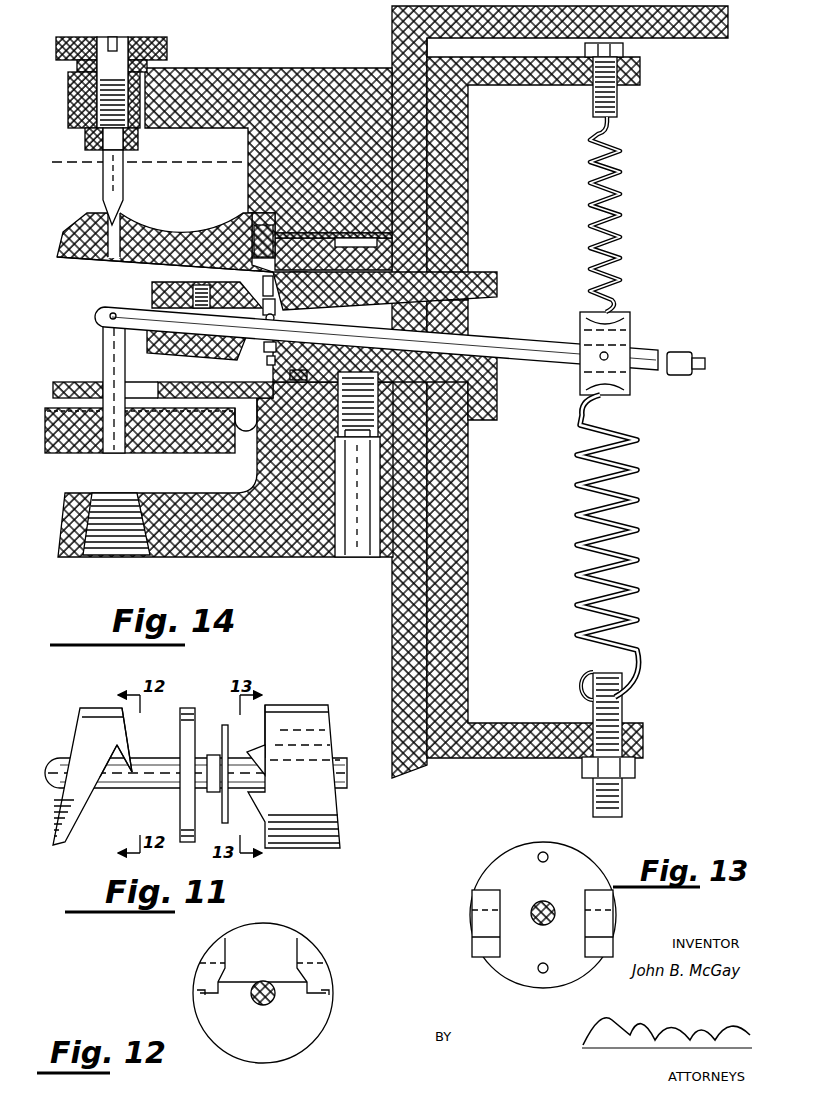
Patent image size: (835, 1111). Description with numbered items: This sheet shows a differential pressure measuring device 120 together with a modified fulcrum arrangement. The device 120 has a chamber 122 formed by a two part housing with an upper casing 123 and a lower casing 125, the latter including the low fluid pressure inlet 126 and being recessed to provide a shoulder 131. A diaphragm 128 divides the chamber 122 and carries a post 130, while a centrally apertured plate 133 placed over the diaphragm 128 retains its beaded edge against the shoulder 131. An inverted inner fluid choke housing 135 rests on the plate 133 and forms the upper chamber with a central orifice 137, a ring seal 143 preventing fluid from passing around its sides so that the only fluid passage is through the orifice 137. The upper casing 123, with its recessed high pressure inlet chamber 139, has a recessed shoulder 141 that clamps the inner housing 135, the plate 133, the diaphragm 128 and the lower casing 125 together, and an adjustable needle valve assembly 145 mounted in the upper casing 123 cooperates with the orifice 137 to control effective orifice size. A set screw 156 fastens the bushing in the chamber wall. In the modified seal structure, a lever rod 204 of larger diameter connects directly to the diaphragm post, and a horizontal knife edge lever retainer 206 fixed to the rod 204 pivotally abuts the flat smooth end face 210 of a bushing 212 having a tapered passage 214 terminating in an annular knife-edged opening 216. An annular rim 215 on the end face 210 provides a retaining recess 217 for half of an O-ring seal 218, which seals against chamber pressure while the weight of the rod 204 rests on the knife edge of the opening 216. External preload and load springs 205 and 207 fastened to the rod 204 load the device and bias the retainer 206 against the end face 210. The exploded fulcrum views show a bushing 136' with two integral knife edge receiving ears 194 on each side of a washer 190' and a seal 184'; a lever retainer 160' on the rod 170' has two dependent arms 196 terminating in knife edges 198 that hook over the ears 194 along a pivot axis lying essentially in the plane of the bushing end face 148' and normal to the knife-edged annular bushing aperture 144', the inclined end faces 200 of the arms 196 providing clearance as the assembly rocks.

In FIG. 14, the measuring device 120 is at (360, 563).
In FIG. 14, the chamber 122 is at (280, 80).
In FIG. 14, the upper casing 123 is at (340, 88).
In FIG. 14, the lower casing 125 is at (185, 557).
In FIG. 14, the low fluid pressure inlet 126 is at (115, 556).
In FIG. 14, the diaphragm 128 is at (195, 435).
In FIG. 14, the post 130 is at (105, 355).
In FIG. 14, the shoulder 131 is at (263, 420).
In FIG. 14, the plate 133 is at (60, 385).
In FIG. 14, the inner fluid choke housing 135 is at (80, 250).
In FIG. 11, the fulcrum bushing 136' is at (294, 756).
In FIG. 13, the fulcrum bushing 136' is at (543, 900).
In FIG. 14, the orifice 137 is at (145, 230).
In FIG. 14, the high pressure inlet chamber 139 is at (192, 154).
In FIG. 14, the recessed shoulder 141 is at (262, 212).
In FIG. 14, the ring seal 143 is at (284, 233).
In FIG. 11, the knife-edged annular bushing aperture 144' is at (305, 739).
In FIG. 13, the knife-edged annular bushing aperture 144' is at (555, 929).
In FIG. 14, the needle valve assembly 145 is at (130, 36).
In FIG. 11, the bushing end face 148' is at (280, 711).
In FIG. 13, the bushing end face 148' is at (575, 876).
In FIG. 14, the set screw 156 is at (382, 426).
In FIG. 11, the lever retainer 160' is at (90, 760).
In FIG. 12, the lever retainer 160' is at (263, 984).
In FIG. 11, the rod 170' is at (196, 781).
In FIG. 12, the rod 170' is at (271, 1003).
In FIG. 13, the rod 170' is at (554, 900).
In FIG. 11, the seal 184' is at (216, 761).
In FIG. 11, the washer 190' is at (199, 756).
In FIG. 11, the knife edge receiving ears 194 is at (252, 760).
In FIG. 13, the knife edge receiving ears 194 is at (475, 905).
In FIG. 11, the dependent arms 196 is at (123, 725).
In FIG. 12, the dependent arms 196 is at (200, 967).
In FIG. 11, the knife edges 198 is at (123, 790).
In FIG. 12, the knife edges 198 is at (198, 995).
In FIG. 11, the end faces 200 is at (128, 745).
In FIG. 12, the end faces 200 is at (222, 957).
In FIG. 14, the lever rod 204 is at (520, 332).
In FIG. 14, the preload spring 205 is at (622, 228).
In FIG. 14, the knife edge lever retainer 206 is at (160, 282).
In FIG. 14, the load spring 207 is at (640, 540).
In FIG. 14, the end face 210 is at (272, 282).
In FIG. 14, the bushing 212 is at (322, 275).
In FIG. 14, the tapered passage 214 is at (430, 305).
In FIG. 14, the annular rim 215 is at (262, 363).
In FIG. 14, the knife-edged opening 216 is at (283, 318).
In FIG. 14, the retaining recess 217 is at (286, 351).
In FIG. 14, the O-ring seal 218 is at (216, 298).